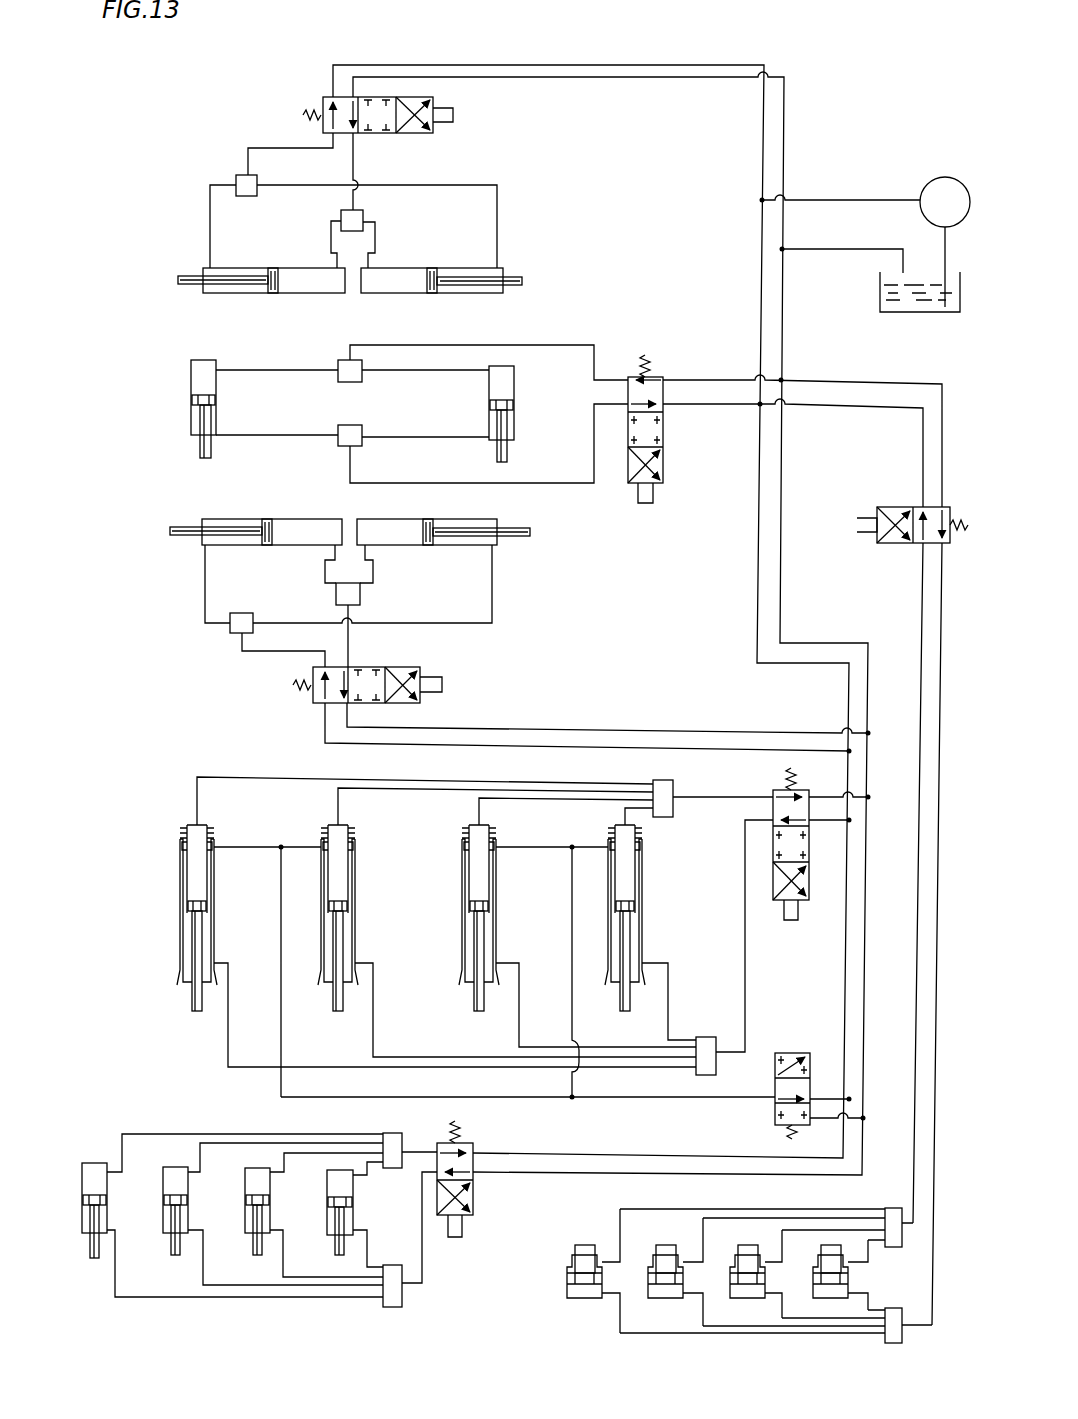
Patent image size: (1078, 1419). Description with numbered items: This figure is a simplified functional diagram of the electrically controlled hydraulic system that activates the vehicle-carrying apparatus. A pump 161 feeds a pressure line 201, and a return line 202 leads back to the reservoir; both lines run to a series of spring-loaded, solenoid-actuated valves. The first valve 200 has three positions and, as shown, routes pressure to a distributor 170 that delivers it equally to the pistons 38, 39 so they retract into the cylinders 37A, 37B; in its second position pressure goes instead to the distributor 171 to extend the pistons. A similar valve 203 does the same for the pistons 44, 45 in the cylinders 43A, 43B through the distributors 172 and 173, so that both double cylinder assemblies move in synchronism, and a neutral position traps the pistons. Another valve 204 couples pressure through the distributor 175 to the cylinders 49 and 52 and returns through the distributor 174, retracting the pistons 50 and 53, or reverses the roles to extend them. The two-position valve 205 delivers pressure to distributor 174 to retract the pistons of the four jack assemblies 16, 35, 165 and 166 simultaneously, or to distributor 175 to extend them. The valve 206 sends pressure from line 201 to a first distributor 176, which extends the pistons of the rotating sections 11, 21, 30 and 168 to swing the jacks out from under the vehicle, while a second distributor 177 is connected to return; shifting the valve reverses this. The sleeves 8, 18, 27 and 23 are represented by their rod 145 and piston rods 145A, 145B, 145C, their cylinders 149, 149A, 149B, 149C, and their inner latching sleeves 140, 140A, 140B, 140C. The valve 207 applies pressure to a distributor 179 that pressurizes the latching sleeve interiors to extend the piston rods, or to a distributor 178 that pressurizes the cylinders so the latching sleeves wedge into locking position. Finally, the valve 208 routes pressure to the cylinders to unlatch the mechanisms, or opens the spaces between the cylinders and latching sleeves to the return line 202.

The solenoid-actuated valve 200 is at (398, 135).
The distributor 170 is at (248, 197).
The distributor 171 is at (363, 214).
The cylinder 37B is at (261, 283).
The cylinder 37A is at (441, 282).
The piston 39 is at (238, 295).
The piston 38 is at (468, 295).
The cylinder 52 is at (174, 409).
The piston 53 is at (199, 445).
The distributor 175 is at (338, 430).
The distributor 174 is at (352, 383).
The cylinder 49 is at (526, 418).
The piston 50 is at (508, 455).
The piston 44 is at (180, 528).
The cylinder 43B is at (247, 511).
The cylinder 43A is at (465, 512).
The piston 45 is at (520, 532).
The distributor 172 is at (241, 613).
The distributor 173 is at (360, 596).
The solenoid-actuated valve 203 is at (402, 667).
The solenoid-actuated hydraulic valve 204 is at (664, 441).
The pressure line 201 is at (760, 228).
The return line 202 is at (783, 290).
The pump 161 is at (938, 177).
The solenoid-actuated valve 205 is at (898, 507).
The distributor 178 is at (657, 780).
The solenoid-actuated valve 207 is at (778, 790).
The cylinder 149A is at (181, 847).
The sleeve 18 is at (152, 924).
The latching sleeve 140A is at (181, 924).
The piston rod 145A is at (192, 1002).
The cylinder 149 is at (355, 870).
The sleeve 8 is at (352, 929).
The inner latching sleeve 140 is at (355, 935).
The rod 145 is at (334, 1000).
The cylinder 149B is at (463, 860).
The sleeve 27 is at (446, 926).
The latching sleeve 140B is at (464, 942).
The piston rod 145B is at (474, 1008).
The cylinder 149C is at (642, 868).
The sleeve 23 is at (647, 932).
The latching sleeve 140C is at (642, 945).
The piston rod 145C is at (620, 1008).
The distributor 179 is at (706, 1037).
The solenoid-actuated valve 208 is at (800, 1053).
The distributor 176 is at (393, 1133).
The rotating section 11 is at (82, 1193).
The rotating section 21 is at (163, 1192).
The rotating section 30 is at (245, 1193).
The rotating section 168 is at (327, 1197).
The solenoid-actuated valve 206 is at (476, 1200).
The distributor 177 is at (393, 1307).
The jack assembly 16 is at (567, 1276).
The jack assembly 165 is at (650, 1292).
The jack assembly 35 is at (731, 1292).
The jack assembly 166 is at (813, 1293).